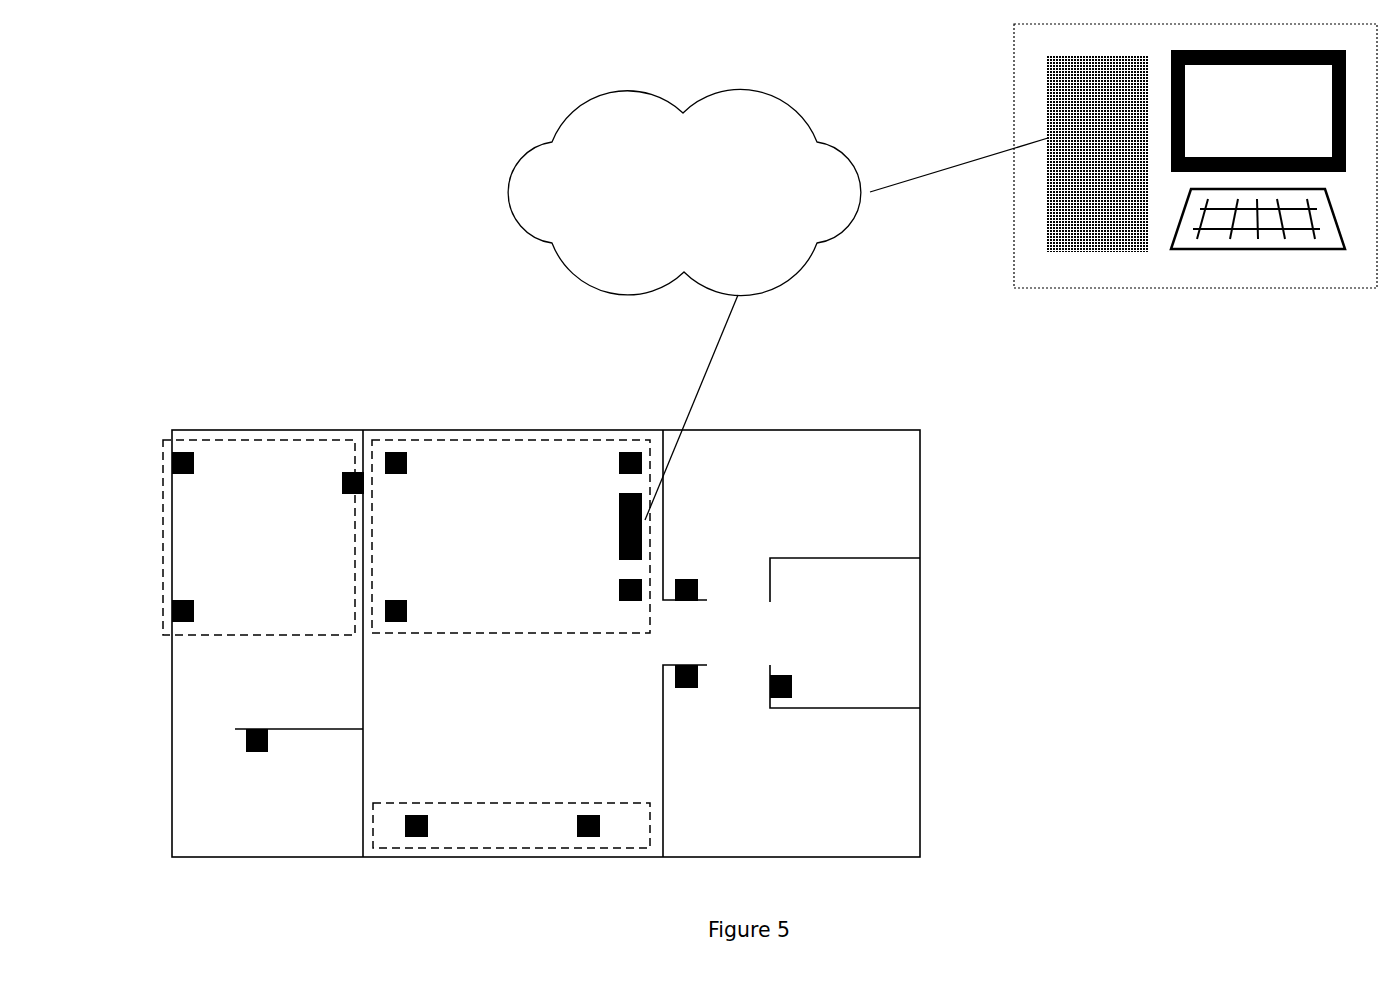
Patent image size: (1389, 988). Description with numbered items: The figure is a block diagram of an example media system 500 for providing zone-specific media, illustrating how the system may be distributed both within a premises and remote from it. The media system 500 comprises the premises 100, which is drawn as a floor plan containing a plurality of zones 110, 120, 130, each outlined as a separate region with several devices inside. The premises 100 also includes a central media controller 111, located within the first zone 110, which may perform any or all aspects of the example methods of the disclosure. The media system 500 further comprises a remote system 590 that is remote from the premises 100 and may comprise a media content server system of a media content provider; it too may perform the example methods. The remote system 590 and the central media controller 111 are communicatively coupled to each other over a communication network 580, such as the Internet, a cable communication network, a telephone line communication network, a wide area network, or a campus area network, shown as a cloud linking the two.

The media system 500 is at (208, 80).
The premises 100 is at (205, 373).
The zone 110 is at (512, 441).
The central media controller 111 is at (619, 526).
The zone 120 is at (505, 803).
The zone 130 is at (278, 438).
The communication network 580 is at (617, 92).
The remote system 590 is at (1012, 60).